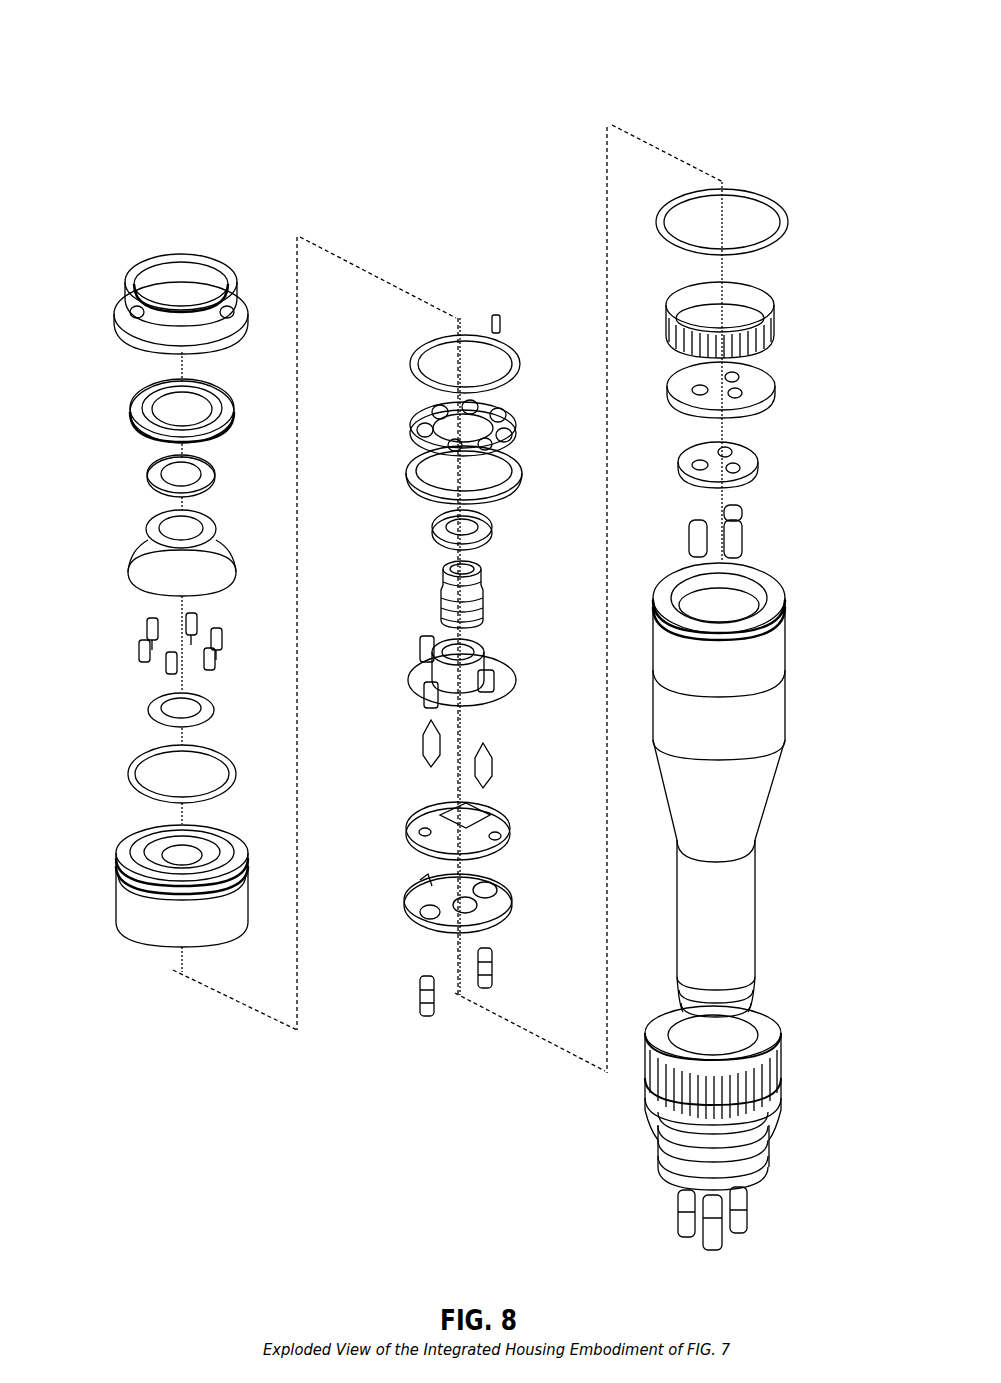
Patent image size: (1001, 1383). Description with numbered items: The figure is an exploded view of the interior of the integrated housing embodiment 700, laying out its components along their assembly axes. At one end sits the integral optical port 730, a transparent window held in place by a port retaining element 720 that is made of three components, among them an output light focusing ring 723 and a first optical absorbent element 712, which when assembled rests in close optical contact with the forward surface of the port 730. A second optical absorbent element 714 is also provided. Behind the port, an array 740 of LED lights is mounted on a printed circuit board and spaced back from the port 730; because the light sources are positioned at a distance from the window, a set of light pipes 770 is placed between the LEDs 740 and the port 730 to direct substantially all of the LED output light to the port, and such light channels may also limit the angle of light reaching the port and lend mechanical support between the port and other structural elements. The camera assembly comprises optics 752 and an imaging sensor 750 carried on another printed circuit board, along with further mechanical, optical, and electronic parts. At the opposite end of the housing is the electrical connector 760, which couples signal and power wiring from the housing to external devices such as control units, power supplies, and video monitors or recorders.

The integrated housing embodiment 700 is at (135, 103).
The port retaining element 720 is at (107, 238).
The output light focusing ring 723 is at (130, 412).
The first optical absorbent element 712 is at (148, 534).
The integral optical port 730 is at (130, 564).
The light pipes 770 is at (165, 672).
The second optical absorbent element 714 is at (148, 712).
The array of LED lights 740 is at (432, 410).
The optics 752 is at (442, 592).
The imaging sensor 750 is at (428, 804).
The electrical connector 760 is at (755, 1208).